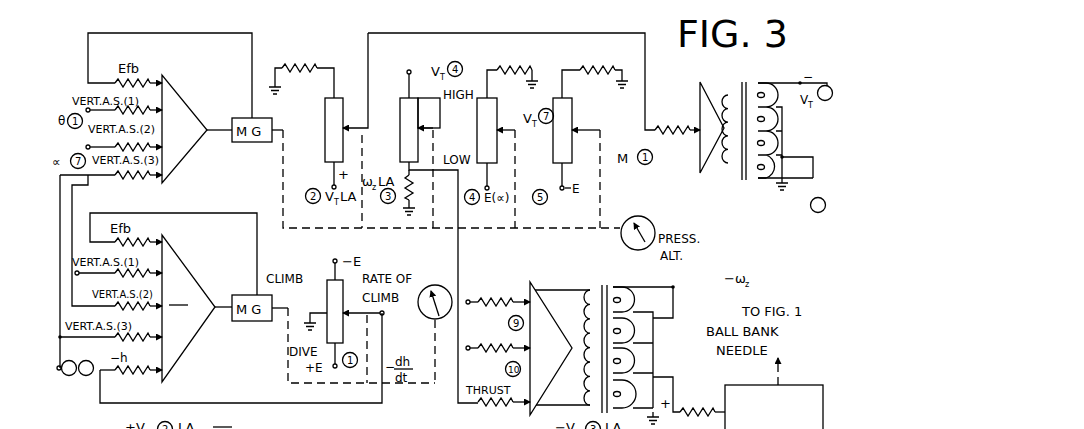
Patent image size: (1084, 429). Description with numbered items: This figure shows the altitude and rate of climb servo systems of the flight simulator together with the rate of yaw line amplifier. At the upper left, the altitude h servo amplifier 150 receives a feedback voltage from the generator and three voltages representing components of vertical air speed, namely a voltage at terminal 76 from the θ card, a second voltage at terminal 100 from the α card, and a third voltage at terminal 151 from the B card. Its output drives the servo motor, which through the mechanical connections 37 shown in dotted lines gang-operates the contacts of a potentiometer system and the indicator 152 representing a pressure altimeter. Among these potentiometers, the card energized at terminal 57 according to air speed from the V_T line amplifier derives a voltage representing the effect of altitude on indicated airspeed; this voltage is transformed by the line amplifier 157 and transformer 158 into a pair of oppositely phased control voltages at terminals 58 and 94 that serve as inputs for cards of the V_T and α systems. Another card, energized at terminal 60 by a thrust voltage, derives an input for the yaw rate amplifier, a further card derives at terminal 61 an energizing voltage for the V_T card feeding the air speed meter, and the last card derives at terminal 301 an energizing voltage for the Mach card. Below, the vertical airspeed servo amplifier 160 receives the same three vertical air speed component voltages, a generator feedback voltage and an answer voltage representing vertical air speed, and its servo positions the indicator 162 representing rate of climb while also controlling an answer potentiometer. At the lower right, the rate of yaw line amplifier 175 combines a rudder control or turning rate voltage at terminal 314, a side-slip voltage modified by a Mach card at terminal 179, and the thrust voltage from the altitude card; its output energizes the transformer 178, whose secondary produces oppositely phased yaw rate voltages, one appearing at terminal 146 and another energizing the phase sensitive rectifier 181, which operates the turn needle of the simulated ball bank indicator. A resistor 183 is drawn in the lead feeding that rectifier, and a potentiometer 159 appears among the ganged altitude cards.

The altitude servo amplifier 150 is at (184, 104).
The vertical airspeed servo amplifier 160 is at (184, 268).
The terminal 76 is at (86, 108).
The terminal 100 is at (86, 148).
The terminal 151 is at (60, 366).
The mechanical connections 37 is at (384, 231).
The terminal 57 is at (330, 186).
The terminal 60 is at (409, 70).
The yaw rate potentiometer 159 is at (425, 250).
The terminal 61 is at (526, 121).
The terminal 301 is at (614, 134).
The indicator 152 is at (628, 220).
The line amplifier 157 is at (700, 102).
The transformer 158 is at (734, 80).
The terminal 58 is at (800, 82).
The terminal 94 is at (812, 179).
The indicator 162 is at (357, 313).
The rate of yaw line amplifier 175 is at (542, 298).
The transformer 178 is at (604, 283).
The terminal 146 is at (673, 287).
The terminal 314 is at (494, 315).
The terminal 179 is at (494, 361).
The phase sensitive rectifier 181 is at (752, 385).
The resistor 183 is at (688, 413).